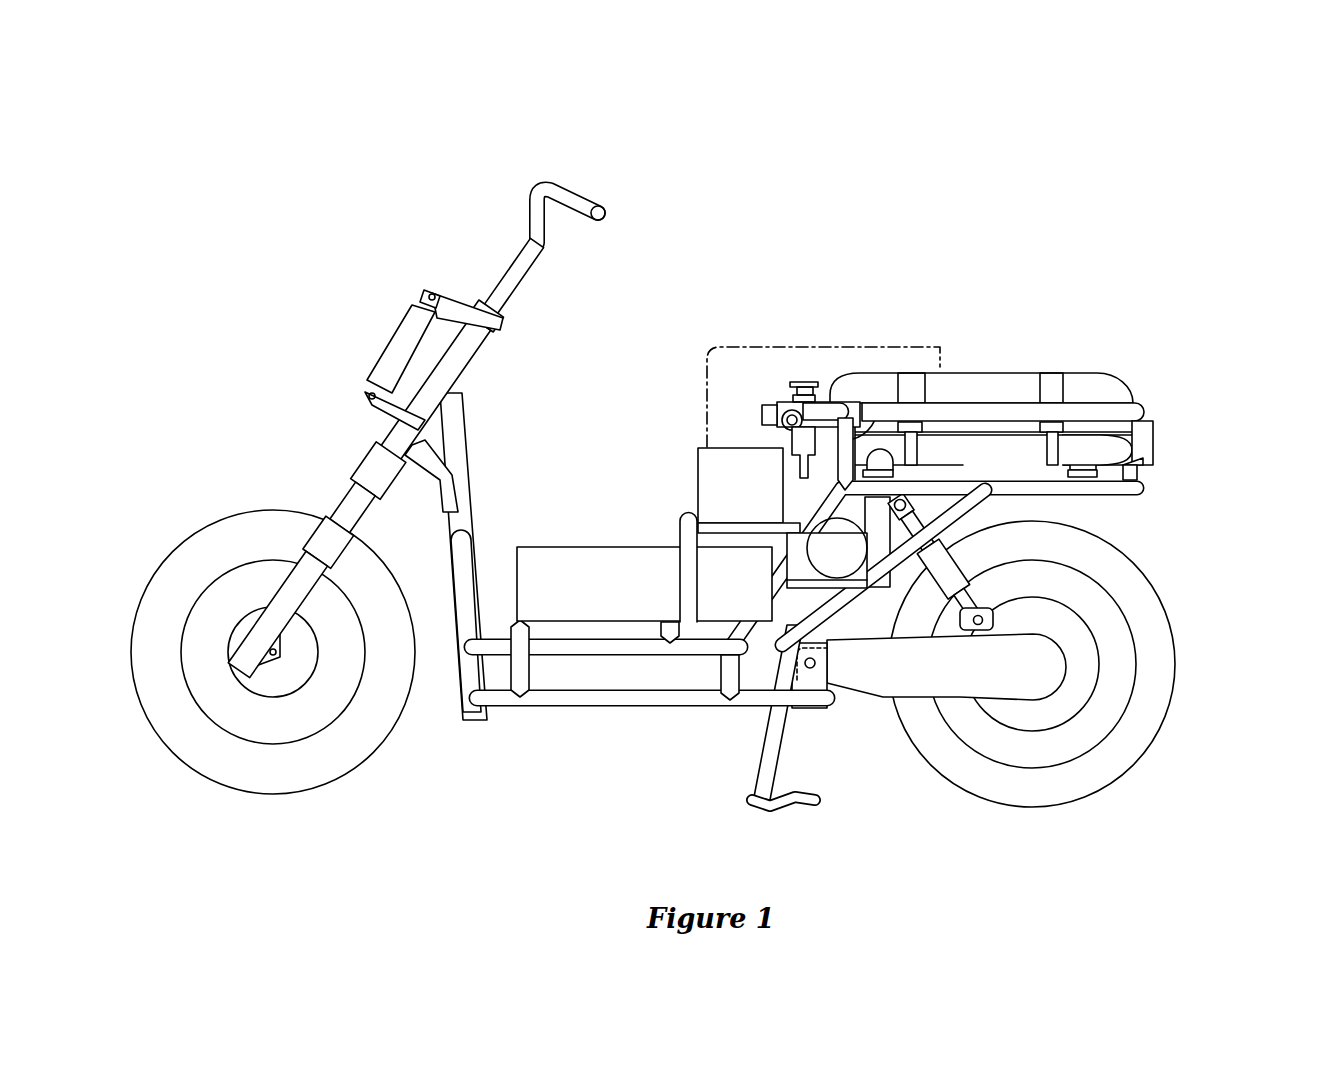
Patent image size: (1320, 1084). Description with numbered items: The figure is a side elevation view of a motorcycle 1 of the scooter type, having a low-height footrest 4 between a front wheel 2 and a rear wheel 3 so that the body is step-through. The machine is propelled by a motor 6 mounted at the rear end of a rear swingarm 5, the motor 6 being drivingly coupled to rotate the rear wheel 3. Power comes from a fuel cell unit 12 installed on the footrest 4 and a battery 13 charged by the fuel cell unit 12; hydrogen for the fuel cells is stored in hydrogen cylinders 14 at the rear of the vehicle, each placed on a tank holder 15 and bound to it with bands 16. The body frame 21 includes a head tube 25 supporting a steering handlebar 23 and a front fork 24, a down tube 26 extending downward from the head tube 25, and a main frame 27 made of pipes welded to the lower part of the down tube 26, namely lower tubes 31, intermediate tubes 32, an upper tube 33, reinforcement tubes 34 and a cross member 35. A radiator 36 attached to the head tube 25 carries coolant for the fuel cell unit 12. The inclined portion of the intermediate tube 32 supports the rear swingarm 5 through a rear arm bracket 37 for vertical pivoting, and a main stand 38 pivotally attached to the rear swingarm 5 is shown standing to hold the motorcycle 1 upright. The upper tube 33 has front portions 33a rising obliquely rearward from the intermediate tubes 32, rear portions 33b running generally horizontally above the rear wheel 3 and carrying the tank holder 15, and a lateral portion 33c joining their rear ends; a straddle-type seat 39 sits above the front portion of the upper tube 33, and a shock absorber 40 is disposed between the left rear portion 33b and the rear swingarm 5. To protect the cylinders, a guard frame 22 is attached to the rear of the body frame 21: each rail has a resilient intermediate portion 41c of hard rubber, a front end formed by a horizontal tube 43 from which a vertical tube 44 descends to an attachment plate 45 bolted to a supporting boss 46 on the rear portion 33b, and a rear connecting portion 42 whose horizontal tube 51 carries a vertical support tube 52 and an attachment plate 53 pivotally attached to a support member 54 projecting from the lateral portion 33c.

The motorcycle 1 is at (485, 160).
The front wheel 2 is at (345, 772).
The rear wheel 3 is at (1095, 790).
The footrest 4 is at (586, 617).
The rear swingarm 5 is at (965, 702).
The motor 6 is at (1040, 732).
The fuel cell unit 12 is at (552, 585).
The battery 13 is at (698, 448).
The hydrogen cylinder 14 is at (1022, 373).
The tank holder 15 is at (1105, 437).
The bands 16 is at (910, 385).
The body frame 21 is at (462, 452).
The guard frame 22 is at (990, 390).
The steering handlebar 23 is at (585, 193).
The front fork 24 is at (340, 497).
The head tube 25 is at (403, 358).
The down tube 26 is at (470, 487).
The main frame 27 is at (633, 617).
The lower tubes 31 is at (600, 705).
The intermediate tubes 32 is at (553, 660).
The upper tube 33 is at (743, 592).
The front portions 33a is at (782, 648).
The rear portions 33b is at (1060, 497).
The lateral portion 33c is at (1130, 496).
The reinforcement tubes 34 is at (465, 672).
The cross member 35 is at (683, 518).
The radiator 36 is at (413, 323).
The rear arm bracket 37 is at (830, 665).
The main stand 38 is at (752, 803).
The seat 39 is at (897, 347).
The shock absorber 40 is at (912, 575).
The intermediate portion 41c is at (955, 405).
The connecting portion 42 is at (1155, 412).
The horizontal tube 43 is at (802, 395).
The vertical tube 44 is at (862, 395).
The attachment plate 45 is at (838, 403).
The supporting boss 46 is at (795, 470).
The horizontal tube 51 is at (1140, 410).
The vertical support tube 52 is at (1155, 432).
The attachment plate 53 is at (1155, 455).
The support member 54 is at (1140, 473).